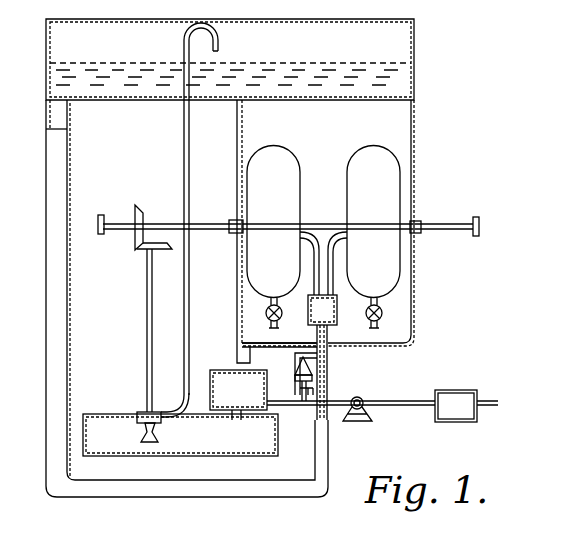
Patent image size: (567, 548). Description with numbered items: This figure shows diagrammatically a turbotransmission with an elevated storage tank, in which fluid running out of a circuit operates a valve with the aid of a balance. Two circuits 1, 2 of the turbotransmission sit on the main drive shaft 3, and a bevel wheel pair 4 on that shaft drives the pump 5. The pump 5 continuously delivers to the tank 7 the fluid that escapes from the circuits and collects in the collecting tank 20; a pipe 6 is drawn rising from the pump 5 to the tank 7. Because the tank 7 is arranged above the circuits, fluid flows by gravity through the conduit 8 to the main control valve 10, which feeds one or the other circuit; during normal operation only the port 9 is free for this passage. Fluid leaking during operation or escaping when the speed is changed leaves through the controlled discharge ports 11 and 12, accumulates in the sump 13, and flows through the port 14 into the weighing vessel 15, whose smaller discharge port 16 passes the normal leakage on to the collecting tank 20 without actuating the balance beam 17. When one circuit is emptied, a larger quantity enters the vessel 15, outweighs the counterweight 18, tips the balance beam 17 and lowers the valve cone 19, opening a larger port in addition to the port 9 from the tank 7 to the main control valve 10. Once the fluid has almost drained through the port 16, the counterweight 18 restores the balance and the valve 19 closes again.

The circuit of the turbotransmission 1 is at (273, 222).
The circuit of the turbotransmission 2 is at (373, 222).
The main drive shaft 3 is at (167, 222).
The bevel wheel pair 4 is at (135, 248).
The pump 5 is at (137, 430).
The siphon pipe 6 is at (184, 149).
The tank 7 is at (230, 59).
The conduit 8 is at (46, 348).
The port 9 is at (318, 368).
The main control valve 10 is at (323, 278).
The controlled discharge port 11 is at (266, 313).
The controlled discharge port 12 is at (387, 313).
The sump 13 is at (339, 372).
The port 14 is at (279, 355).
The weighing vessel 15 is at (238, 390).
The discharge port 16 is at (228, 420).
The balance beam 17 is at (402, 398).
The counterweight 18 is at (456, 406).
The valve cone 19 is at (314, 377).
The collecting tank 20 is at (216, 453).